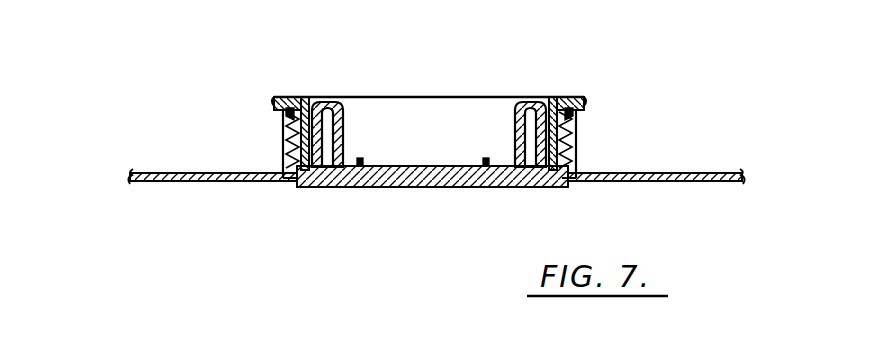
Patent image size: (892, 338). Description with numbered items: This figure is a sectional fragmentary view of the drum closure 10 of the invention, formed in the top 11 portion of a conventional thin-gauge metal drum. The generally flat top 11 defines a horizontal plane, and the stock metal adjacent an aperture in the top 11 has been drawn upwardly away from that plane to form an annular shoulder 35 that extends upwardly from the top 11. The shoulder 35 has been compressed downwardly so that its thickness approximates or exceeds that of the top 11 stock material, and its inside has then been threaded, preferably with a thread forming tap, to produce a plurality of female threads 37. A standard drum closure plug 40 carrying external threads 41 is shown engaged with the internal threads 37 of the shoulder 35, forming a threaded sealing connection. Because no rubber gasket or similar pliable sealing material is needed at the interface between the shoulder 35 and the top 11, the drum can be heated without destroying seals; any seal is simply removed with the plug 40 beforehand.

The drum closure 10 is at (630, 49).
The top 11 is at (208, 182).
The annular shoulder 35 is at (282, 152).
The female threads 37 is at (577, 141).
The drum closure plug 40 is at (313, 102).
The external threads 41 is at (541, 100).